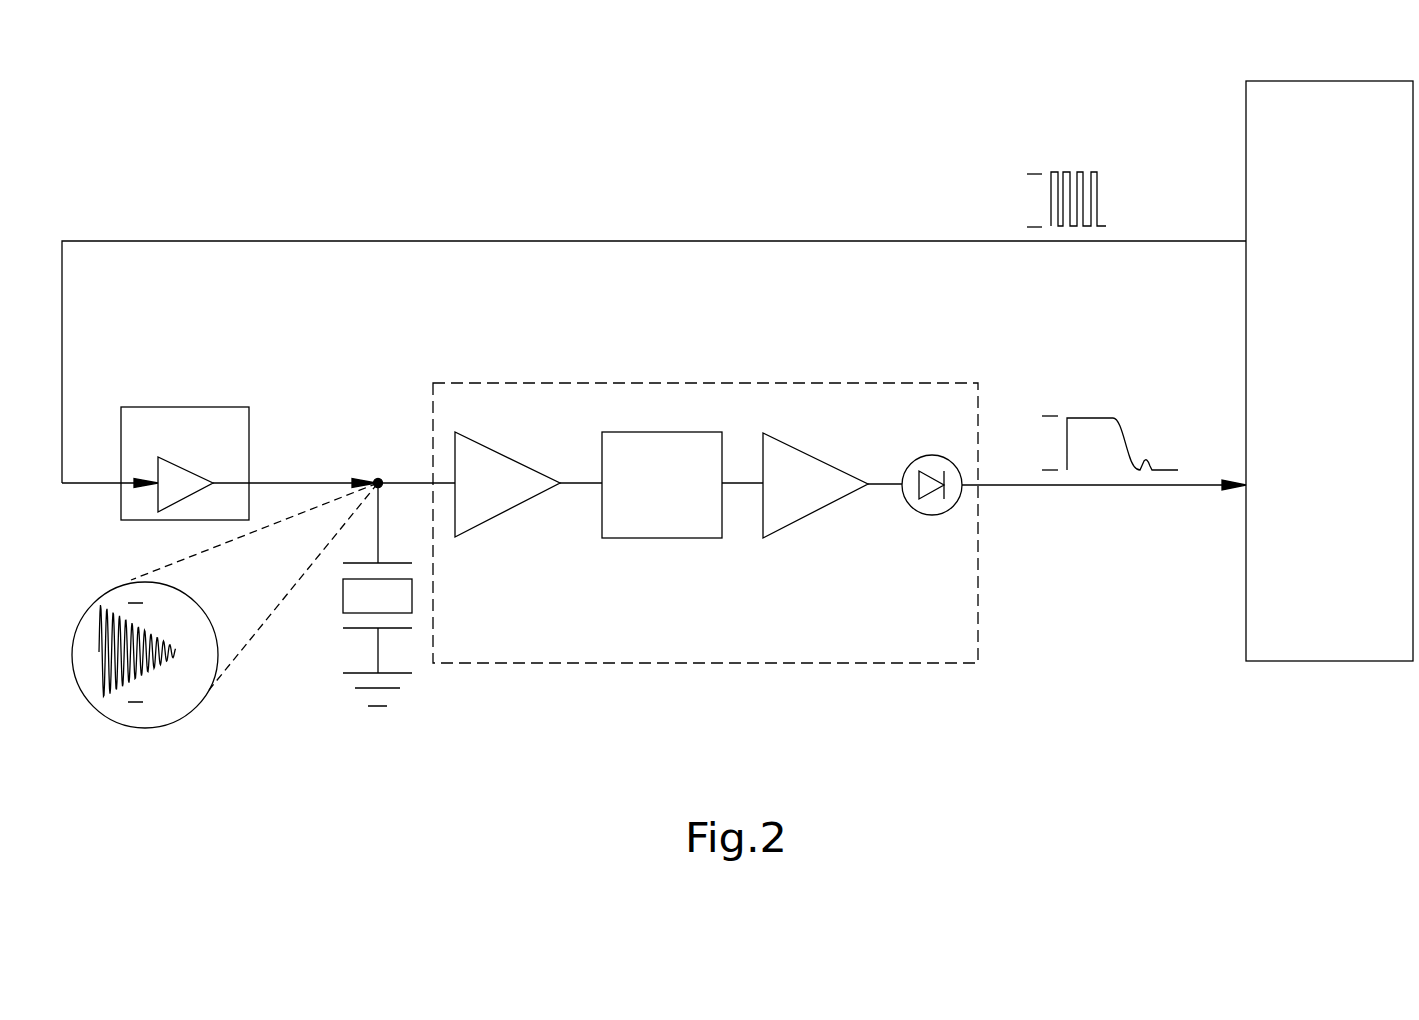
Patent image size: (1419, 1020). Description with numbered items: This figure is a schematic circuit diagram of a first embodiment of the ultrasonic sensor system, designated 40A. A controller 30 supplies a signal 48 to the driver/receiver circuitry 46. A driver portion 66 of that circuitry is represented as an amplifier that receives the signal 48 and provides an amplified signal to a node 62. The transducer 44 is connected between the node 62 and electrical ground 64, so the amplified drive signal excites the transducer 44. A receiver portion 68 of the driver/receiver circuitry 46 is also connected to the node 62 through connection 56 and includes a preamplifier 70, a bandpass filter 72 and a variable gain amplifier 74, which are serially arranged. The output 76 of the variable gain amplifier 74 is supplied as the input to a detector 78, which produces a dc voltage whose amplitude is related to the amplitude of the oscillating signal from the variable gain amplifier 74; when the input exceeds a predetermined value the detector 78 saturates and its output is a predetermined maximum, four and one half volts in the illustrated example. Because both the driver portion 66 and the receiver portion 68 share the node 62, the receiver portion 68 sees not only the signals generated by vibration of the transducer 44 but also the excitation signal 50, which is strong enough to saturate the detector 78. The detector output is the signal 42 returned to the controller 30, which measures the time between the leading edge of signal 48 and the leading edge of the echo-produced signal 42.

The ultrasonic sensor system first embodiment 40A is at (791, 139).
The signal 48 is at (330, 240).
The driver/receiver circuitry 46 is at (159, 366).
The driver portion 66 is at (237, 415).
The excitation signal 50 is at (306, 482).
The node 62 is at (378, 478).
The receiver input line 56 is at (427, 482).
The transducer 44 is at (327, 630).
The electrical ground 64 is at (390, 688).
The receiver portion 68 is at (625, 382).
The preamplifier 70 is at (488, 457).
The bandpass filter 72 is at (627, 440).
The variable gain amplifier 74 is at (808, 460).
The output of the variable gain amplifier 76 is at (870, 491).
The detector 78 is at (960, 569).
The signal 42 is at (1104, 488).
The controller 30 is at (1338, 411).